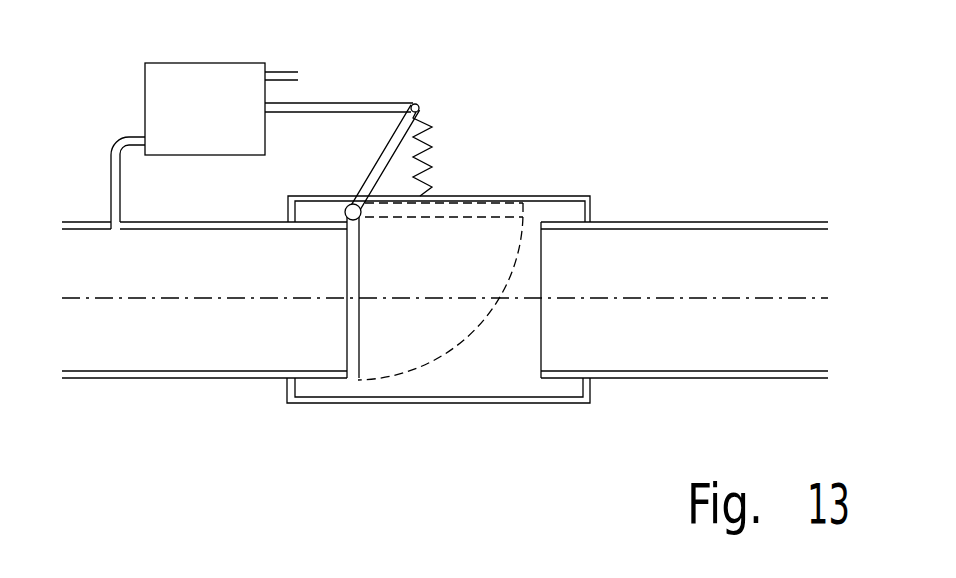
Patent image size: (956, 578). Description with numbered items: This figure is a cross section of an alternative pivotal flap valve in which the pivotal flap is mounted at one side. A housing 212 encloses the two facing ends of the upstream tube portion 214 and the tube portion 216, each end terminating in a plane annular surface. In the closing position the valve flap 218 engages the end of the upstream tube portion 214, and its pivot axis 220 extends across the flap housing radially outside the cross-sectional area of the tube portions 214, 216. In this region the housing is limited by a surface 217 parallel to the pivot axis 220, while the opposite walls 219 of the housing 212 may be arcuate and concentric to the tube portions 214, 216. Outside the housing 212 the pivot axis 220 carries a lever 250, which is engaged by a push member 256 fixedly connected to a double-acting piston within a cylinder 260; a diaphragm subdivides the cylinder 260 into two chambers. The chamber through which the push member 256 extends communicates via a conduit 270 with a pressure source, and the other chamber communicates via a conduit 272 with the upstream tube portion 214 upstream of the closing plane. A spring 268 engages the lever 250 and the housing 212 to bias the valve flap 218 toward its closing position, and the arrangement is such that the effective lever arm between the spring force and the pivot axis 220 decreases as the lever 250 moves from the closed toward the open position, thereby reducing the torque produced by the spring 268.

The housing 212 is at (572, 180).
The upstream tube portion 214 is at (128, 380).
The tube portion 216 is at (705, 222).
The surface 217 is at (473, 196).
The valve flap 218 is at (352, 357).
The walls 219 is at (448, 405).
The pivot axis 220 is at (362, 219).
The lever 250 is at (372, 170).
The push member 256 is at (331, 102).
The cylinder 260 is at (167, 156).
The spring 268 is at (432, 132).
The conduit 270 is at (281, 72).
The conduit 272 is at (117, 143).